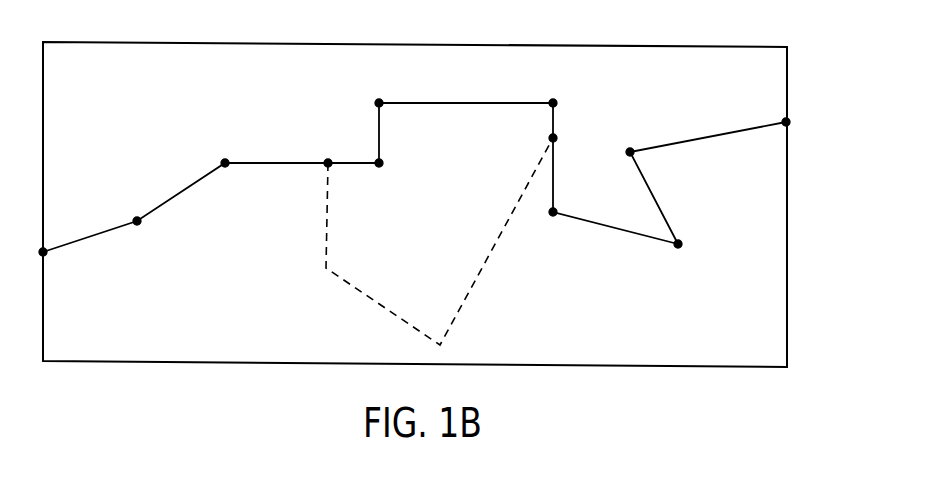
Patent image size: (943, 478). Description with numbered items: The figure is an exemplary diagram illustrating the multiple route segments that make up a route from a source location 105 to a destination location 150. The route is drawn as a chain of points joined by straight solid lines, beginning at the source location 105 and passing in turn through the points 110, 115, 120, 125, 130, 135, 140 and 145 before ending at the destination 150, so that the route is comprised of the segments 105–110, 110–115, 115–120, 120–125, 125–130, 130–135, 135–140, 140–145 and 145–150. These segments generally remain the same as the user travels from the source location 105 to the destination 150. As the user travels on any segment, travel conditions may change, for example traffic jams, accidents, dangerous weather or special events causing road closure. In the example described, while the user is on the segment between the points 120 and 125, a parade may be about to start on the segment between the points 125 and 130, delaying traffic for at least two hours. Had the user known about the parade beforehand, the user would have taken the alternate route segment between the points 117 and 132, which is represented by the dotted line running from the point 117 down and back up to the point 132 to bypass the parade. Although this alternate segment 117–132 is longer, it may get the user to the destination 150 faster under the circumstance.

The source location 105 is at (61, 265).
The route point 110 is at (152, 237).
The route point 115 is at (239, 177).
The alternate route segment start point 117 is at (330, 149).
The route point 120 is at (393, 177).
The route point 125 is at (384, 90).
The route point 130 is at (570, 91).
The alternate route segment end point 132 is at (574, 136).
The route point 135 is at (562, 225).
The route point 140 is at (697, 257).
The route point 145 is at (643, 137).
The destination location 150 is at (808, 123).